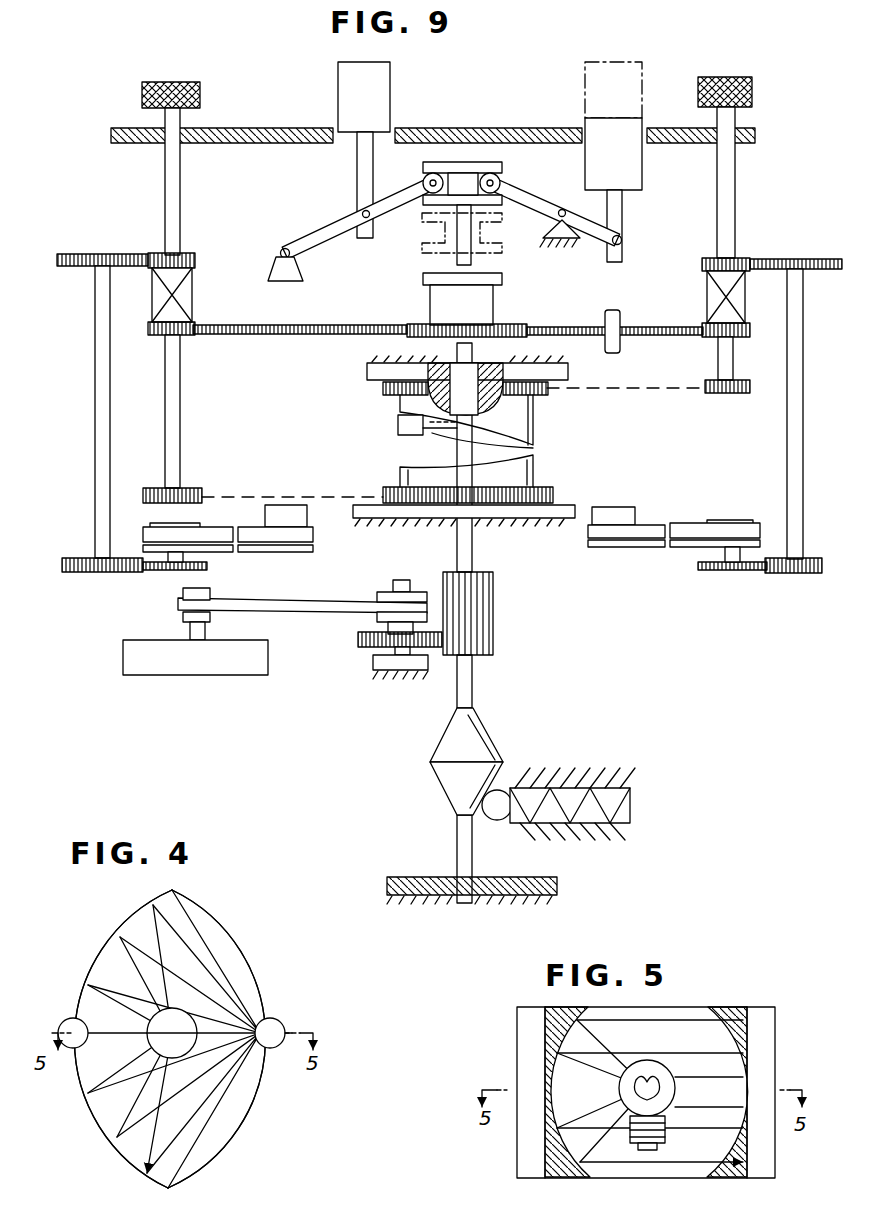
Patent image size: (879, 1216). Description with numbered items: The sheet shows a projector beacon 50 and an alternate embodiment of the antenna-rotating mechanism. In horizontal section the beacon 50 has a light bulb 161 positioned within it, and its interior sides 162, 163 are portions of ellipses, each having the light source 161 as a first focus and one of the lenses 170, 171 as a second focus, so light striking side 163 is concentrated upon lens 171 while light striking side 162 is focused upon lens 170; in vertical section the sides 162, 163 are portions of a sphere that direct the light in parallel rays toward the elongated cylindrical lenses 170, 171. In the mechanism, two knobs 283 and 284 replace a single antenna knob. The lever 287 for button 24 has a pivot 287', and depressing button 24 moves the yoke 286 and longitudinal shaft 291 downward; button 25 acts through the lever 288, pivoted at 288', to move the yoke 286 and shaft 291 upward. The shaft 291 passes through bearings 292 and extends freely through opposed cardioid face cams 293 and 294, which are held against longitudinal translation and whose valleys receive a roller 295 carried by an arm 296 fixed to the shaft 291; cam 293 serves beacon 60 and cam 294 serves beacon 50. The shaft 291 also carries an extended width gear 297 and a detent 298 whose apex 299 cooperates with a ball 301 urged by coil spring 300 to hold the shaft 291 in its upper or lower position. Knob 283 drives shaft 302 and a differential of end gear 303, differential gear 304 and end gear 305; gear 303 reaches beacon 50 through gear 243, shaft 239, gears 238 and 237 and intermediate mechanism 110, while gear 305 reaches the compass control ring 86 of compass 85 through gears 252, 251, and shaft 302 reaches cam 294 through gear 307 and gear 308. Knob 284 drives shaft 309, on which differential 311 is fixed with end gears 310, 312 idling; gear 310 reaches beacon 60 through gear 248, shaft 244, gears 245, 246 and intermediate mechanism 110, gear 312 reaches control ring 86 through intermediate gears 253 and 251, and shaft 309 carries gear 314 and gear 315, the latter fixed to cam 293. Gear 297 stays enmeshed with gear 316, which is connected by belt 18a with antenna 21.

In FIG. 9, the belt 18a is at (295, 600).
In FIG. 9, the antenna 21 is at (123, 655).
In FIG. 9, the pretuning button 24 is at (338, 92).
In FIG. 9, the pretuning button 25 is at (642, 186).
In FIG. 9, the projector beacon 50 is at (307, 514).
In FIG. 4, the projector beacon 50 is at (250, 937).
In FIG. 5, the projector beacon 50 is at (517, 1035).
In FIG. 9, the beacon 60 is at (622, 508).
In FIG. 9, the compass 85 is at (510, 280).
In FIG. 9, the compass control ring 86 is at (430, 288).
In FIG. 9, the intermediate mechanism 110 is at (255, 552).
In FIG. 4, the light bulb 161 is at (207, 1017).
In FIG. 5, the light bulb 161 is at (688, 1043).
In FIG. 4, the side 162 is at (255, 968).
In FIG. 5, the side 162 is at (737, 1038).
In FIG. 4, the side 163 is at (103, 957).
In FIG. 4, the lens 170 is at (73, 1018).
In FIG. 5, the lens 170 is at (517, 1153).
In FIG. 4, the lens 171 is at (283, 1028).
In FIG. 5, the lens 171 is at (762, 1148).
In FIG. 9, the gear 237 is at (175, 571).
In FIG. 9, the gear 238 is at (92, 573).
In FIG. 9, the shaft 239 is at (96, 428).
In FIG. 9, the gear 243 is at (82, 254).
In FIG. 9, the shaft 244 is at (803, 362).
In FIG. 9, the gear 245 is at (792, 574).
In FIG. 9, the gear 246 is at (745, 571).
In FIG. 9, the gear 248 is at (815, 250).
In FIG. 9, the gear 251 is at (522, 317).
In FIG. 9, the gear 252 is at (345, 318).
In FIG. 9, the intermediate gear 253 is at (585, 317).
In FIG. 9, the control knob 283 is at (142, 93).
In FIG. 9, the knob 284 is at (752, 95).
In FIG. 9, the yoke 286 is at (502, 168).
In FIG. 9, the lever 287 is at (358, 218).
In FIG. 9, the pivot 287' is at (318, 268).
In FIG. 9, the lever 288 is at (554, 211).
In FIG. 9, the pivot 288' is at (539, 236).
In FIG. 9, the longitudinal shaft 291 is at (455, 258).
In FIG. 9, the bearings 292 is at (440, 364).
In FIG. 9, the cardioid face cam 293 is at (535, 425).
In FIG. 9, the cardioid face cam 294 is at (535, 466).
In FIG. 9, the roller 295 is at (398, 425).
In FIG. 9, the arm 296 is at (432, 440).
In FIG. 9, the extended width gear 297 is at (493, 630).
In FIG. 9, the detent 298 is at (445, 730).
In FIG. 9, the apex 299 is at (432, 765).
In FIG. 9, the coil spring 300 is at (630, 810).
In FIG. 9, the ball 301 is at (490, 818).
In FIG. 9, the shaft 302 is at (166, 214).
In FIG. 9, the end gear 303 is at (196, 253).
In FIG. 9, the differential gear 304 is at (192, 302).
In FIG. 9, the end gear 305 is at (190, 335).
In FIG. 9, the gear 307 is at (192, 488).
In FIG. 9, the gear 308 is at (553, 496).
In FIG. 9, the shaft 309 is at (735, 206).
In FIG. 9, the end gear 310 is at (702, 264).
In FIG. 9, the differential gear 311 is at (707, 292).
In FIG. 9, the end gear 312 is at (706, 340).
In FIG. 9, the gear 314 is at (734, 394).
In FIG. 9, the gear 315 is at (383, 390).
In FIG. 9, the gear 316 is at (360, 640).